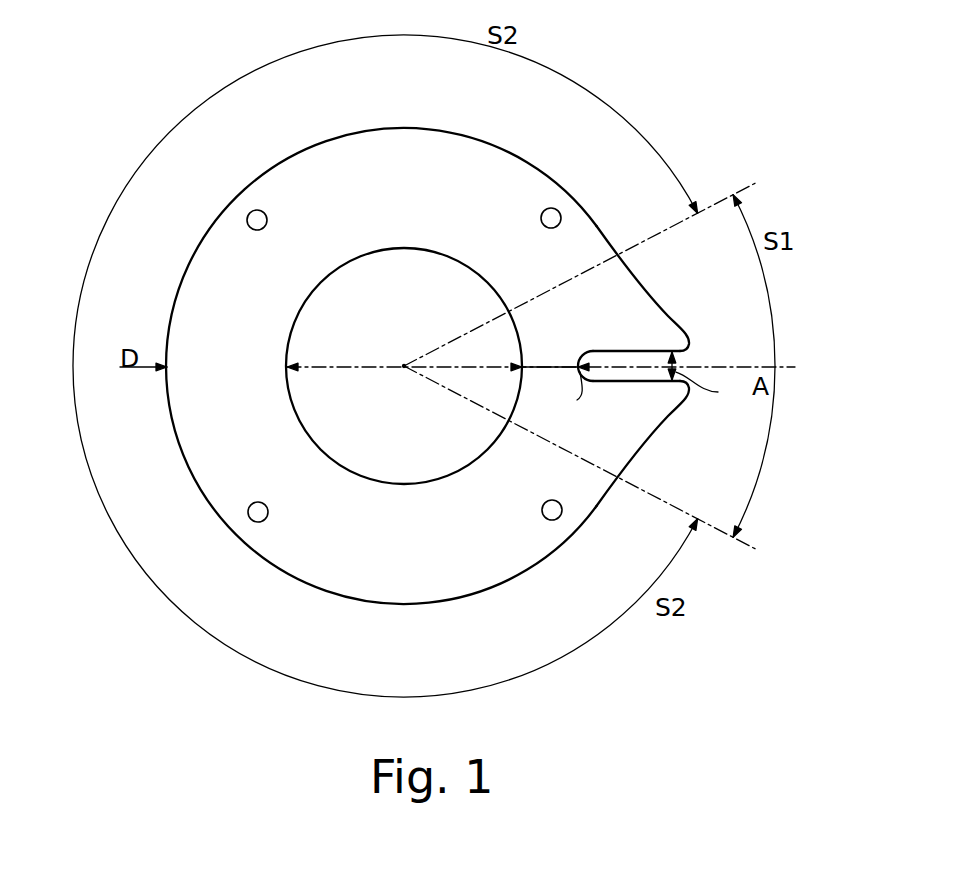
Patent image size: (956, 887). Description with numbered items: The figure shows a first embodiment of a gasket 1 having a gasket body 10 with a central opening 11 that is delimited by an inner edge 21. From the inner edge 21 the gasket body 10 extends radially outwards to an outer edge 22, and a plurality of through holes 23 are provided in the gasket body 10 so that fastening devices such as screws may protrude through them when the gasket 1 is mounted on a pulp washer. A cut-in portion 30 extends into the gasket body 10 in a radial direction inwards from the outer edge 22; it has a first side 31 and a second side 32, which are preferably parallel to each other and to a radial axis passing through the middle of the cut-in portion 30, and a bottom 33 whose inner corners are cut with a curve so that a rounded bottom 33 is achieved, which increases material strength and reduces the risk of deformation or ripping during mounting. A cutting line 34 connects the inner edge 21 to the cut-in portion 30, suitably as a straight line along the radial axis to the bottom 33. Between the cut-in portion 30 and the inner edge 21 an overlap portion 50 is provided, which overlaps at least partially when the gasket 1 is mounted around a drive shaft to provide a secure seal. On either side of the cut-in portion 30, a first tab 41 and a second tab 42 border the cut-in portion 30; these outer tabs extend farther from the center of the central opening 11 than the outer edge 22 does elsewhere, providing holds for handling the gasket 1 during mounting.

The gasket 1 is at (557, 66).
The gasket body 10 is at (194, 425).
The central opening 11 is at (400, 386).
The inner edge 21 is at (401, 249).
The outer edge 22 is at (432, 127).
The through holes 23 is at (258, 219).
The cut-in portion 30 is at (690, 352).
The first side 31 is at (654, 351).
The second side 32 is at (654, 382).
The bottom 33 is at (597, 348).
The cutting line 34 is at (517, 366).
The first tab 41 is at (665, 308).
The second tab 42 is at (670, 422).
The overlap portion 50 is at (552, 360).